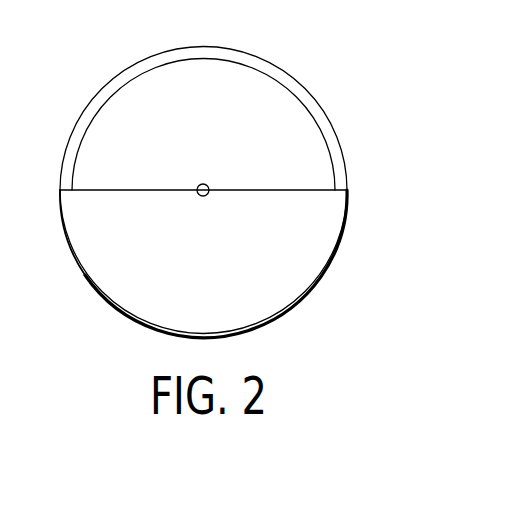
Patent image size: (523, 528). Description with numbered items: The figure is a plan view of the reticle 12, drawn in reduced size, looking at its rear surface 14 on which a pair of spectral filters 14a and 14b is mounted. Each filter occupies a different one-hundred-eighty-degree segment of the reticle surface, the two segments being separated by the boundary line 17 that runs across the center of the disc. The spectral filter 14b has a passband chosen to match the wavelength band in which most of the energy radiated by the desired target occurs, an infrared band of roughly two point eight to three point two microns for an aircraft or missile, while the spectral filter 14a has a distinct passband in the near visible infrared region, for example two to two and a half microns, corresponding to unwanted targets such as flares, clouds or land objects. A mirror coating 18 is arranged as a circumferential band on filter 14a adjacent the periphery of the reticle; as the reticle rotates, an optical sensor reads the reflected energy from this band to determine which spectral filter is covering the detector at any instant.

The reticle 12 is at (295, 82).
The rear surface 14 is at (192, 224).
The spectral filter 14a is at (223, 171).
The spectral filter 14b is at (221, 311).
The boundary line 17 is at (270, 192).
The mirror coating 18 is at (261, 71).